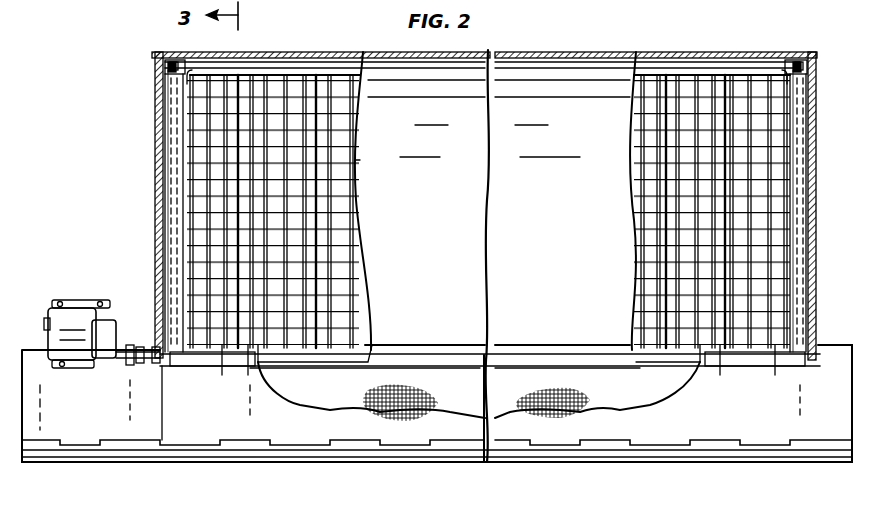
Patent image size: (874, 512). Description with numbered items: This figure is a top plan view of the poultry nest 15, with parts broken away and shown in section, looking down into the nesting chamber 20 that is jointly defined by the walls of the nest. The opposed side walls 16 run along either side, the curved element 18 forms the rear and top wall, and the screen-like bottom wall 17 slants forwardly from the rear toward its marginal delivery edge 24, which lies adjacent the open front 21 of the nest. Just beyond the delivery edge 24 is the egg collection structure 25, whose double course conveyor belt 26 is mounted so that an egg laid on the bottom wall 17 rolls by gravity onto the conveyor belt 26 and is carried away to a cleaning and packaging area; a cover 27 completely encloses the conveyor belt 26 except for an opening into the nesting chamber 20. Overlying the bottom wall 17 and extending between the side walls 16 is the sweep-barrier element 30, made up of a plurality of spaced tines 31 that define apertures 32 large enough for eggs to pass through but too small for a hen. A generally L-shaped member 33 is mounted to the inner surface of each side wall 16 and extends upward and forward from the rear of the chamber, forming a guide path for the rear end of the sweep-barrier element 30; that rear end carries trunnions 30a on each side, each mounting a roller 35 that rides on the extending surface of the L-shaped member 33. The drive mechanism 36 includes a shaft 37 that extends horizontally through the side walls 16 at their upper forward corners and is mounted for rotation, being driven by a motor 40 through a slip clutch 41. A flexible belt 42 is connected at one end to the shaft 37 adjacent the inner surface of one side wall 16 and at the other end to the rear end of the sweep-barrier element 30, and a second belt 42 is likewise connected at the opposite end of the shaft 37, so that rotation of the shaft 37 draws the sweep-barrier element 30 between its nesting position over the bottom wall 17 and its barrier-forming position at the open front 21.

The poultry nest 15 is at (610, 50).
The side walls 16 is at (160, 188).
The bottom wall 17 is at (668, 84).
The curved element 18 is at (456, 221).
The nesting chamber 20 is at (352, 180).
The open front 21 is at (223, 380).
The marginal delivery edge 24 is at (346, 366).
The egg collection structure 25 is at (496, 457).
The conveyor belt 26 is at (430, 412).
The cover 27 is at (148, 428).
The sweep-barrier element 30 is at (246, 375).
The trunnions 30a is at (826, 84).
The tines 31 is at (255, 92).
The apertures 32 is at (216, 146).
The L-shaped member 33 is at (165, 250).
The roller 35 is at (172, 60).
The drive mechanism 36 is at (62, 300).
The shaft 37 is at (218, 368).
The motor 40 is at (58, 320).
The slip clutch 41 is at (133, 345).
The flexible belt 42 is at (175, 165).